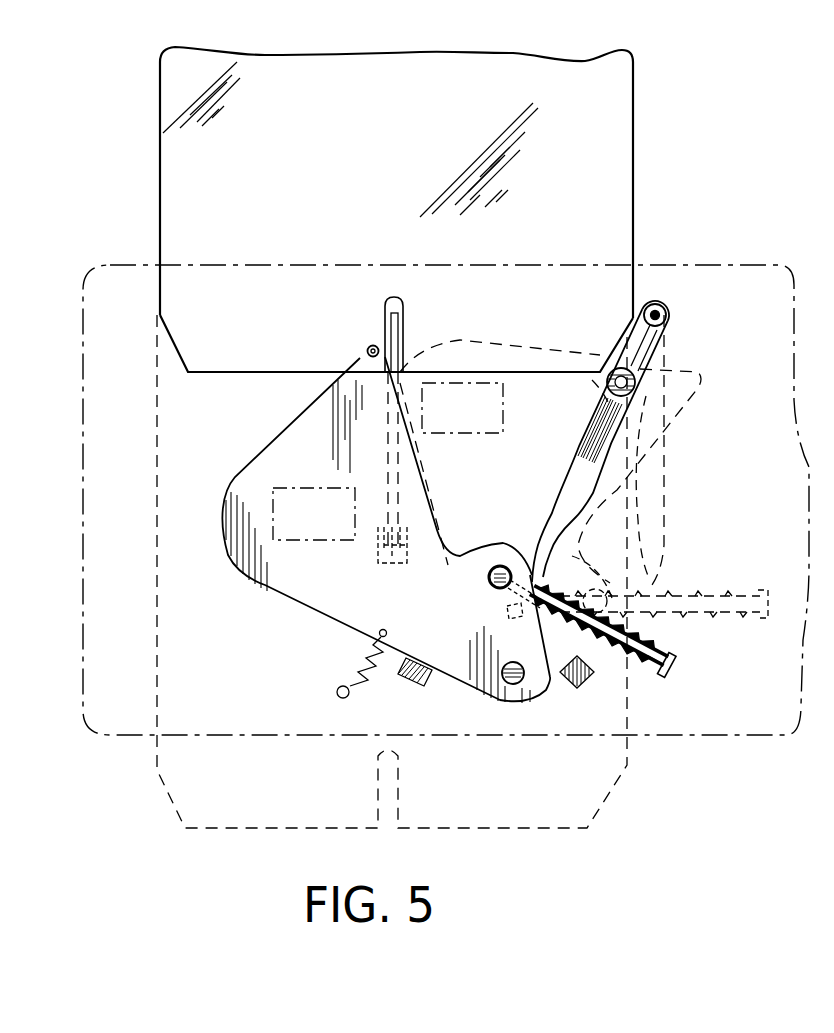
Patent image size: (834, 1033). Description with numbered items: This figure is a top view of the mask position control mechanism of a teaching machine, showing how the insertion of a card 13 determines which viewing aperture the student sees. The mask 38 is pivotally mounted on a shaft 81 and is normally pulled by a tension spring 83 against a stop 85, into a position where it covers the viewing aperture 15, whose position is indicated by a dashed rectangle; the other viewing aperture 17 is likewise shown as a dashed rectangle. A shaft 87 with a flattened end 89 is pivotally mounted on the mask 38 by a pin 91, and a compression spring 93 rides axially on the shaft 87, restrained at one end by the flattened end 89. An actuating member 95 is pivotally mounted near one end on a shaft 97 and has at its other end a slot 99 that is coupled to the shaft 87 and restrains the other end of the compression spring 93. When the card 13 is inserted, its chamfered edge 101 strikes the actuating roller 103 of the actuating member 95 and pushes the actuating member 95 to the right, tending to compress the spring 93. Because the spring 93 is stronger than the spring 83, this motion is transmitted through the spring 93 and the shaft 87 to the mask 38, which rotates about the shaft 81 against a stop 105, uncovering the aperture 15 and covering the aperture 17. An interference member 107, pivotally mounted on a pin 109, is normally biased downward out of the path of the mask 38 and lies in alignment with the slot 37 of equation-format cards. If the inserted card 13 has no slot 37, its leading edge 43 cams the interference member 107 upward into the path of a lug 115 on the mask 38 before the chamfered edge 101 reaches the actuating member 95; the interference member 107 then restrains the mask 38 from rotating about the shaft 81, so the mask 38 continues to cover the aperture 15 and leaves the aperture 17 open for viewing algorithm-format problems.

The card 13 is at (627, 133).
The leading edge 43 is at (258, 374).
The mask 38 is at (283, 592).
The slot 37 is at (397, 306).
The interference member 107 is at (395, 352).
The lug 115 is at (367, 351).
The viewing aperture 17 is at (447, 437).
The viewing aperture 15 is at (312, 490).
The pin 109 is at (376, 535).
The tension spring 83 is at (357, 660).
The stop 85 is at (411, 680).
The shaft 81 is at (520, 684).
The pin 91 is at (490, 581).
The slot 99 is at (522, 613).
The compression spring 93 is at (570, 597).
The flattened end 89 is at (670, 666).
The shaft 87 is at (654, 667).
The stop 105 is at (583, 684).
The actuating member 95 is at (577, 465).
The chamfered edge 101 is at (622, 343).
The actuating roller 103 is at (607, 383).
The shaft 97 is at (666, 315).